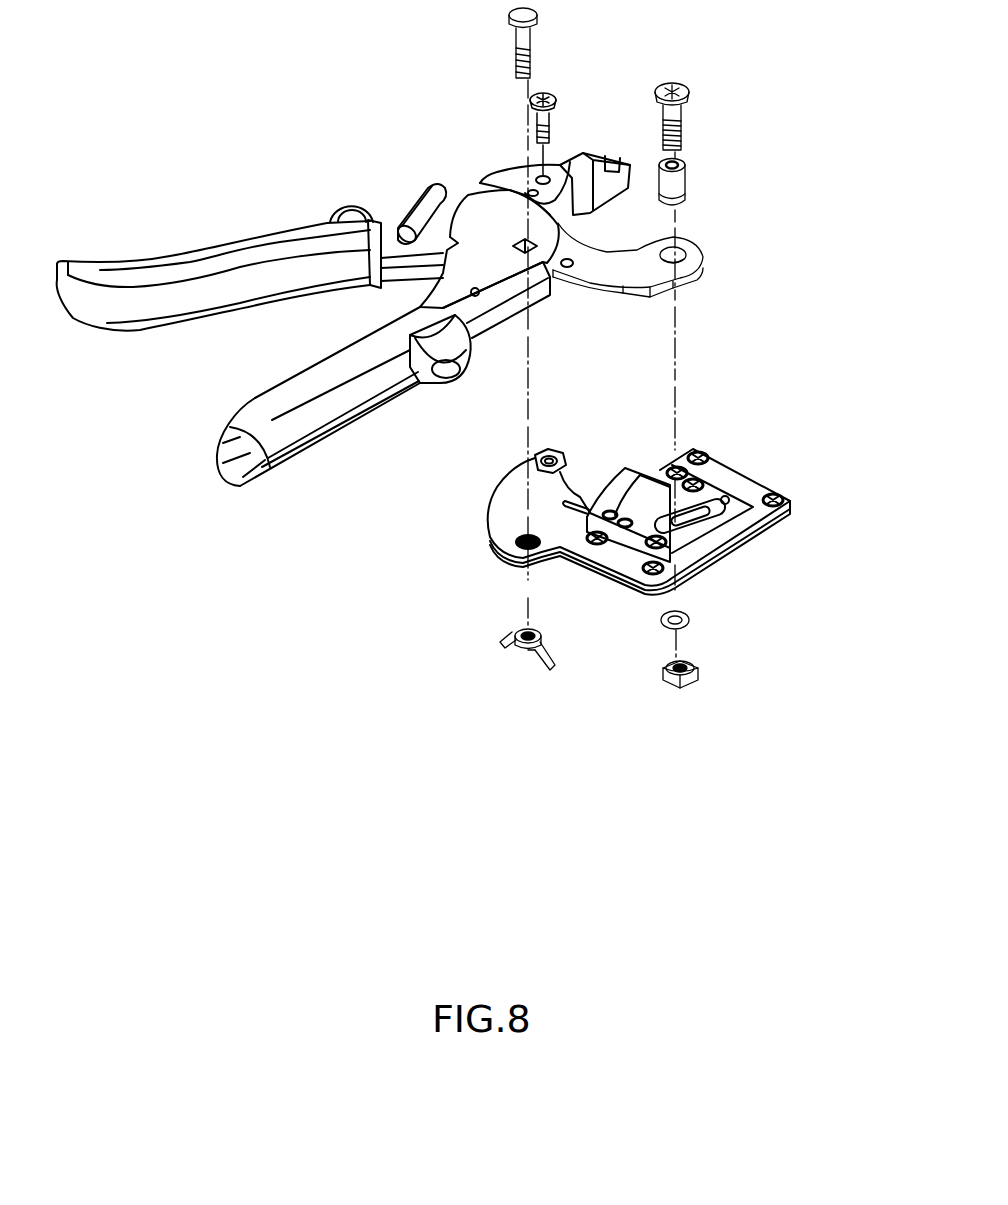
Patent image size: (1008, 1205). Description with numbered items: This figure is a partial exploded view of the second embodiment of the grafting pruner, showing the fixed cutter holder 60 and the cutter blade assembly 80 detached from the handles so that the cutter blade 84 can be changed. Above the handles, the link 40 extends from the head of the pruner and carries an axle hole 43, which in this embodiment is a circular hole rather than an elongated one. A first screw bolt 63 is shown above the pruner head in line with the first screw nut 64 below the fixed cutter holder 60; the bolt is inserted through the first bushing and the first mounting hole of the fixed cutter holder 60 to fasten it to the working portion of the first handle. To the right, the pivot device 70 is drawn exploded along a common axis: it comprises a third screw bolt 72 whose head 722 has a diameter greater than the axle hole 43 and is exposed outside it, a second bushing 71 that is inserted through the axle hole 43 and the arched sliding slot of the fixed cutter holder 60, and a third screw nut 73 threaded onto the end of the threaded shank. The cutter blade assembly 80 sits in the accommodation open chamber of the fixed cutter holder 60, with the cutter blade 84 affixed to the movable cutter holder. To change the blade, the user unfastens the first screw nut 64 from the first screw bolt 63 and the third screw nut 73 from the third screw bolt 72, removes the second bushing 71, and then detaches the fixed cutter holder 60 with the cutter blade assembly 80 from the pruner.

The link 40 is at (605, 268).
The axle hole 43 is at (692, 247).
The fixed cutter holder 60 is at (792, 541).
The first screw bolt 63 is at (520, 40).
The first screw nut 64 is at (527, 660).
The pivot device 70 is at (733, 711).
The second bushing 71 is at (681, 190).
The third screw bolt 72 is at (723, 77).
The head 722 is at (677, 82).
The third screw nut 73 is at (702, 678).
The cutter blade assembly 80 is at (658, 457).
The cutter blade 84 is at (643, 502).